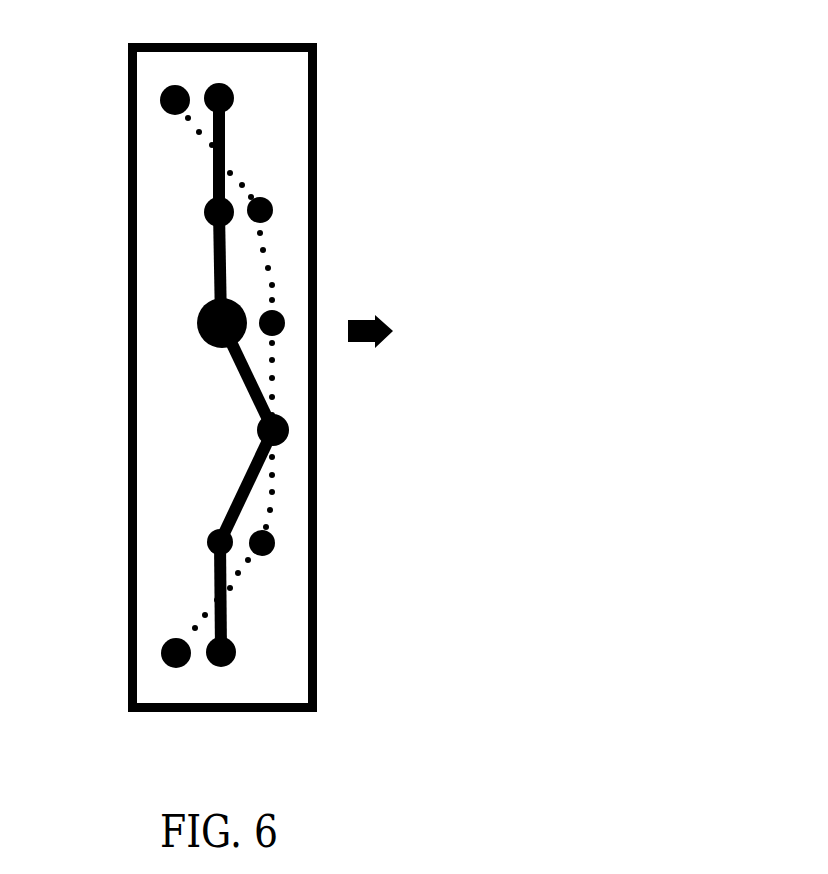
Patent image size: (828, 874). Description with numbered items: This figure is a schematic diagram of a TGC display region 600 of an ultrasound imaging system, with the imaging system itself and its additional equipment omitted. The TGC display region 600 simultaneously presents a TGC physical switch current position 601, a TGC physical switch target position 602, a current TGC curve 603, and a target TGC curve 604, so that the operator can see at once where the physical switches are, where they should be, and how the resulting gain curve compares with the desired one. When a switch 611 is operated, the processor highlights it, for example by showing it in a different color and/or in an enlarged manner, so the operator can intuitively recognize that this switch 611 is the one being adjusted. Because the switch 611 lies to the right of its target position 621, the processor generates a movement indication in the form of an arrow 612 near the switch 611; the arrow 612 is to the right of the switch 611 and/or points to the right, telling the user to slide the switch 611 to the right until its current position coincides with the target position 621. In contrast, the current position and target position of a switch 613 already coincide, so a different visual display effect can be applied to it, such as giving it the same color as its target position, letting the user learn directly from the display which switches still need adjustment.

The TGC display region 600 is at (518, 49).
The TGC physical switch current position 601 is at (213, 547).
The TGC physical switch target position 602 is at (277, 550).
The current TGC curve 603 is at (203, 255).
The target TGC curve 604 is at (277, 270).
The switch 611 is at (203, 337).
The arrow 612 is at (395, 328).
The switch 613 is at (255, 427).
The target position 621 is at (287, 330).